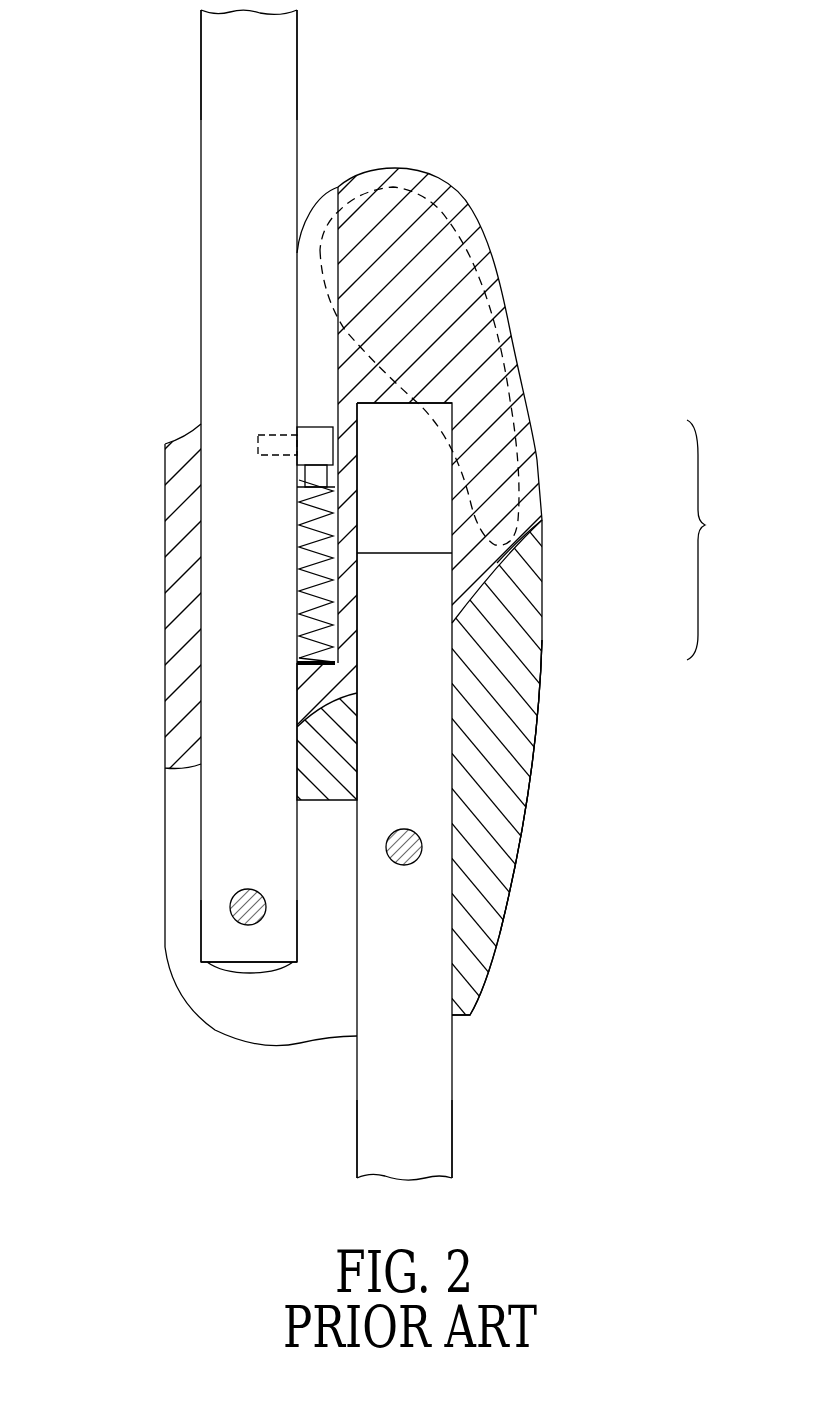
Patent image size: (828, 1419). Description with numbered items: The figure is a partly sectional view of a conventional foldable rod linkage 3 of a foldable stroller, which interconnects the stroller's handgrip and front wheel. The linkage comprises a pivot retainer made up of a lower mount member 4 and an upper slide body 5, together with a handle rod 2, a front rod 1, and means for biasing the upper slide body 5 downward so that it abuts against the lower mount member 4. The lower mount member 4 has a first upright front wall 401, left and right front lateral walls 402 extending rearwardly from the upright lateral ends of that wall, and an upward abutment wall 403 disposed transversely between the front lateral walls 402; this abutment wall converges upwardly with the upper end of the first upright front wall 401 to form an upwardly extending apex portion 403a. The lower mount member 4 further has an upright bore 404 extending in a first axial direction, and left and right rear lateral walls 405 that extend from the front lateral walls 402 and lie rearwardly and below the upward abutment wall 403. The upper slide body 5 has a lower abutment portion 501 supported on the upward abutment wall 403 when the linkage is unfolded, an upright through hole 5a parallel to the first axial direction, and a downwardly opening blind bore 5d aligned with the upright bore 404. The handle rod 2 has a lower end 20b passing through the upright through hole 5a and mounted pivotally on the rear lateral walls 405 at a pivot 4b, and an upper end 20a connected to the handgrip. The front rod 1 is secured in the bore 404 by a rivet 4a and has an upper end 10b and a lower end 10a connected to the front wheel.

The front rod 1 is at (440, 1057).
The lower end of front rod 10a is at (448, 1150).
The upper end of front rod 10b is at (417, 572).
The handle rod 2 is at (288, 143).
The upper end of handle rod 20a is at (212, 50).
The lower end of handle rod 20b is at (213, 943).
The foldable rod linkage 3 is at (706, 540).
The lower mount member 4 is at (541, 631).
The rivet 4a is at (417, 850).
The pivot 4b is at (232, 898).
The first upright front wall 401 is at (537, 707).
The front lateral walls 402 is at (507, 753).
The upward abutment wall 403 is at (505, 565).
The apex portion 403a is at (545, 532).
The upright bore 404 is at (447, 945).
The rear lateral walls 405 is at (218, 1010).
The upper slide body 5 is at (515, 345).
The upright through hole 5a is at (202, 583).
The blind bore 5d is at (433, 483).
The lower abutment portion 501 is at (330, 712).